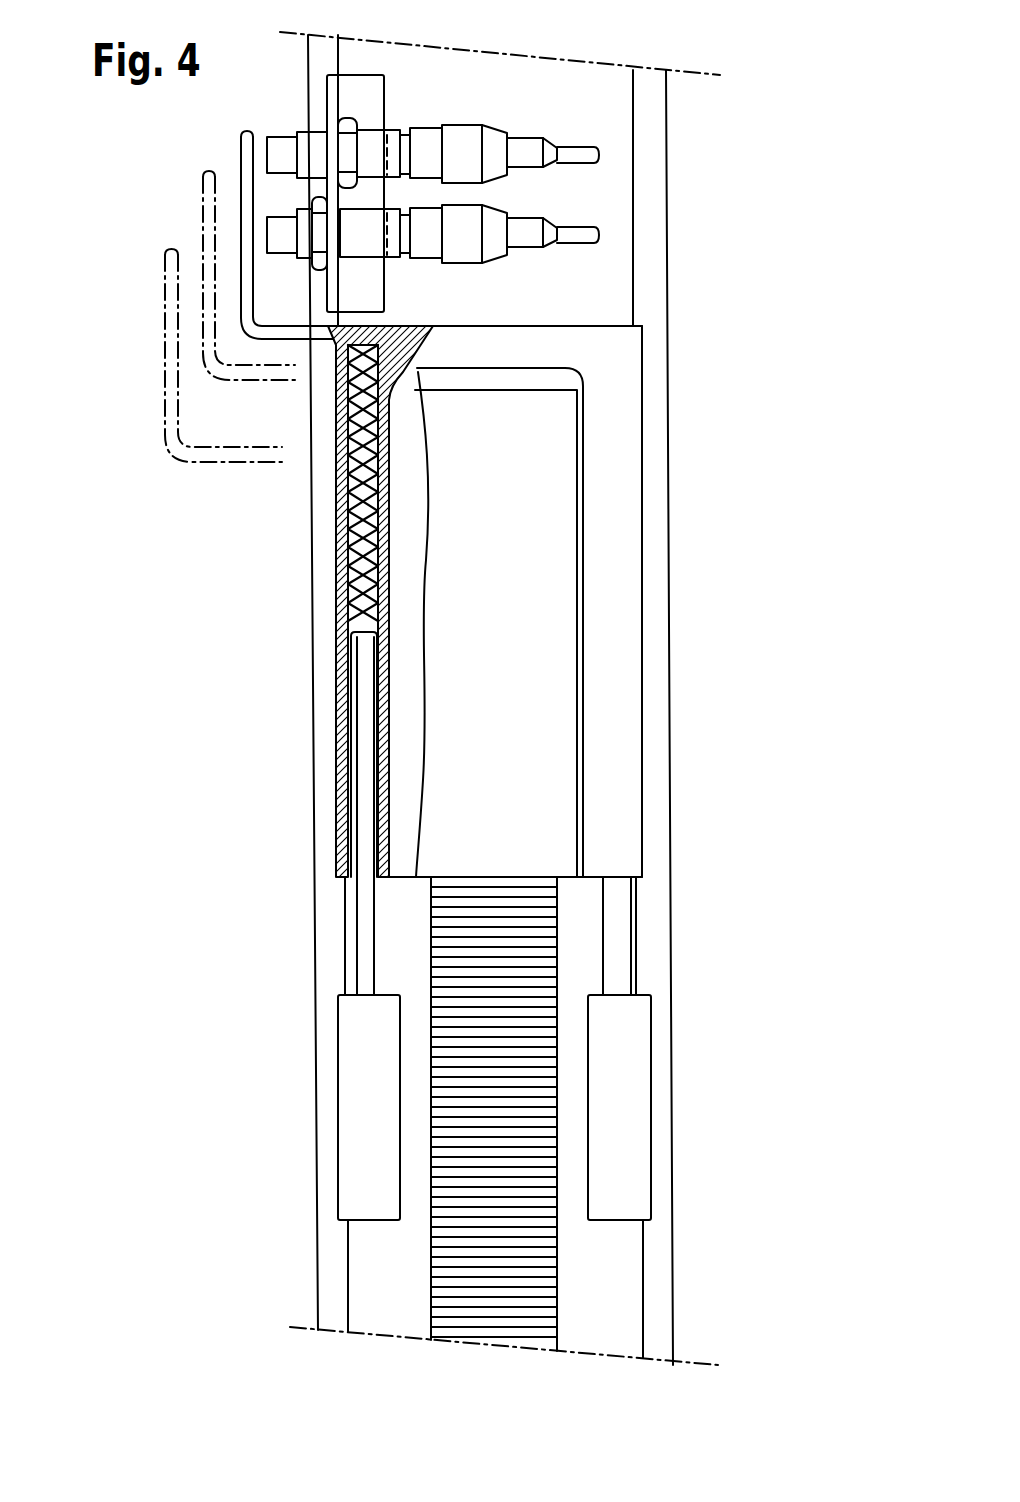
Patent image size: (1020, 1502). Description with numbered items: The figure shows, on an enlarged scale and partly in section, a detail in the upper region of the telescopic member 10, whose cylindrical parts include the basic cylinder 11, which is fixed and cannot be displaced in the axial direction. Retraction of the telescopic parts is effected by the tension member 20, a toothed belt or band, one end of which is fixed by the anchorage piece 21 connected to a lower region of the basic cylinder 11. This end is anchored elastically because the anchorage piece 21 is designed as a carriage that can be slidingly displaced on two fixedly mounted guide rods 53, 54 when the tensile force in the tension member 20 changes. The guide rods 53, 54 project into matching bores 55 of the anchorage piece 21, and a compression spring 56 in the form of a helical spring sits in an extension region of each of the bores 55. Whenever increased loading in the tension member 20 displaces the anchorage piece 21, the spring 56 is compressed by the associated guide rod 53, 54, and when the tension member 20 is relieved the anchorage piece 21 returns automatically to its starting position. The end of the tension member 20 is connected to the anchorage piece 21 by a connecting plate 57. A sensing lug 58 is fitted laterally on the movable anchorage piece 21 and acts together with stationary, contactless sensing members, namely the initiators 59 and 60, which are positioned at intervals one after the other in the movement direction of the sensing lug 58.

The telescopic member 10 is at (692, 209).
The basic cylinder 11 is at (668, 291).
The tension member 20 is at (530, 1294).
The anchorage piece 21 is at (674, 603).
The guide rod 53 is at (360, 923).
The guide rod 54 is at (623, 918).
The bore 55 is at (340, 678).
The compression spring 56 is at (342, 542).
The connecting plate 57 is at (568, 530).
The sensing lug 58 is at (247, 152).
The initiator 59 is at (527, 150).
The initiator 60 is at (490, 240).